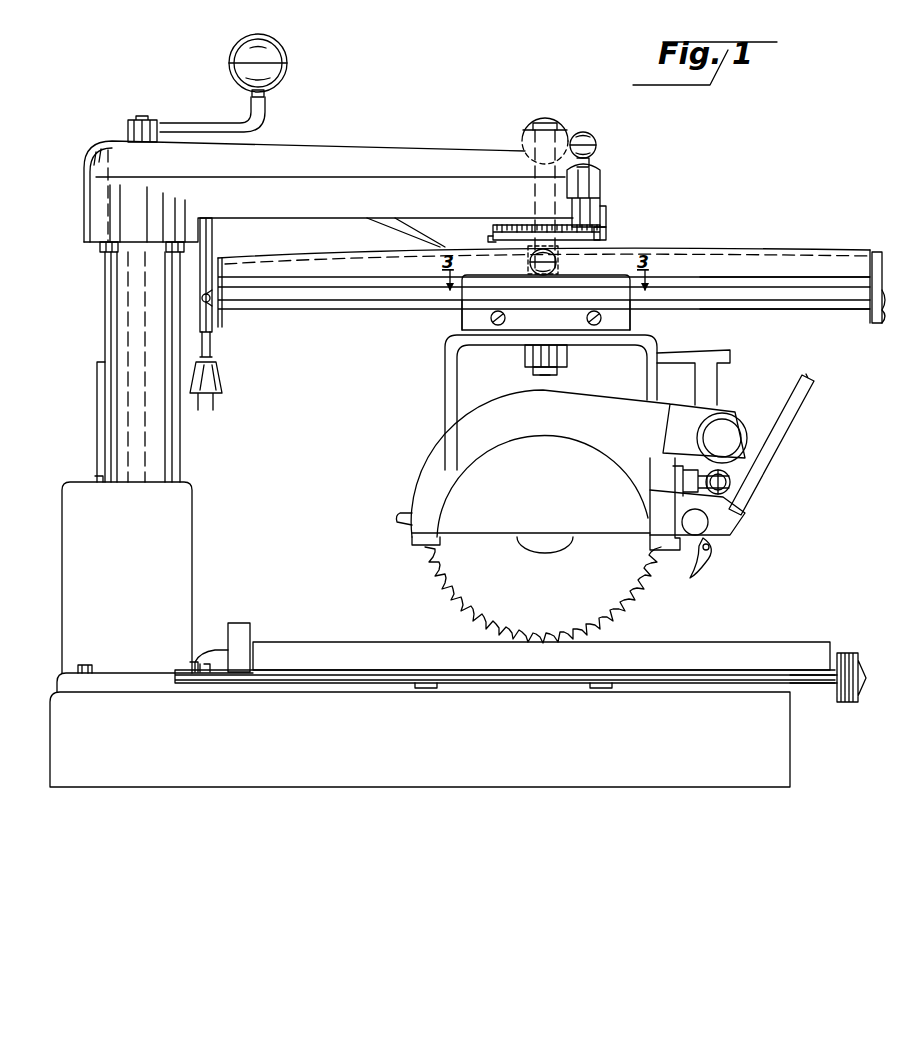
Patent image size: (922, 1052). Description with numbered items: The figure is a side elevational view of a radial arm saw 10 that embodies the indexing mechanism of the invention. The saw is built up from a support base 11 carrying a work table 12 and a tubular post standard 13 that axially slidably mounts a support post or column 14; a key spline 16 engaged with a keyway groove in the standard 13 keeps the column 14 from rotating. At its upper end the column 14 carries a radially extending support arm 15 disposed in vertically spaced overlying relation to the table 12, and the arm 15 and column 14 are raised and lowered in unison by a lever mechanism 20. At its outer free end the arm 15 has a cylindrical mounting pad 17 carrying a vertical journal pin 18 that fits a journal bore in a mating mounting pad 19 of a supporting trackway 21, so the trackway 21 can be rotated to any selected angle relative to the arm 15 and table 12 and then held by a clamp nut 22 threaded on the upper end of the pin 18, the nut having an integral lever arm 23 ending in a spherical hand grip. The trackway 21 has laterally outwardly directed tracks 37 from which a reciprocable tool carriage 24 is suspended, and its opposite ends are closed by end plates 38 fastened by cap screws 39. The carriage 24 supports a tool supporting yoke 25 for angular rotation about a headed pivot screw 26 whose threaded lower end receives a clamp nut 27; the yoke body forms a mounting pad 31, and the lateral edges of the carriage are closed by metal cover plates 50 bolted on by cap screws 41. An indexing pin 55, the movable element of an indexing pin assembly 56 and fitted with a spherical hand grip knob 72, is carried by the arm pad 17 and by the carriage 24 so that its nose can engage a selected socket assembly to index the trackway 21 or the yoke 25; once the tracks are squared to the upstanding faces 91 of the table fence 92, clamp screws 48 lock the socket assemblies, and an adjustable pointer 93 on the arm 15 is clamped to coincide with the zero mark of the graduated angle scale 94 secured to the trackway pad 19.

The radial arm saw 10 is at (80, 476).
The support base 11 is at (53, 748).
The work table 12 is at (777, 640).
The tubular post standard 13 is at (66, 530).
The support post or column 14 is at (103, 303).
The radially extending support arm 15 is at (366, 145).
The key spline 16 is at (96, 372).
The cylindrical mounting pad 17 is at (522, 224).
The journal pin 18 is at (532, 128).
The mounting pad of trackway 19 is at (487, 238).
The lever mechanism 20 is at (180, 122).
The supporting trackway 21 is at (277, 304).
The clamp nut 22 is at (524, 140).
The lever arm 23 is at (550, 122).
The tool carriage 24 is at (461, 316).
The tool supporting yoke 25 is at (444, 362).
The headed pivot screw 26 is at (560, 372).
The clamp nut 27 is at (531, 370).
The mounting pad 31 is at (633, 328).
The tracks 37 is at (832, 296).
The end plates 38 is at (214, 258).
The cap screws 39 is at (207, 300).
The cap screws 41 is at (491, 320).
The clamp screws 48 is at (523, 352).
The metal cover plates 50 is at (546, 302).
The indexing pin 55 is at (598, 156).
The indexing pin assembly 56 is at (605, 174).
The spherical hand grip knob 72 is at (731, 482).
The upstanding faces 91 is at (252, 636).
The table fence 92 is at (239, 620).
The adjustable pointer 93 is at (608, 216).
The graduated angle scale 94 is at (603, 236).